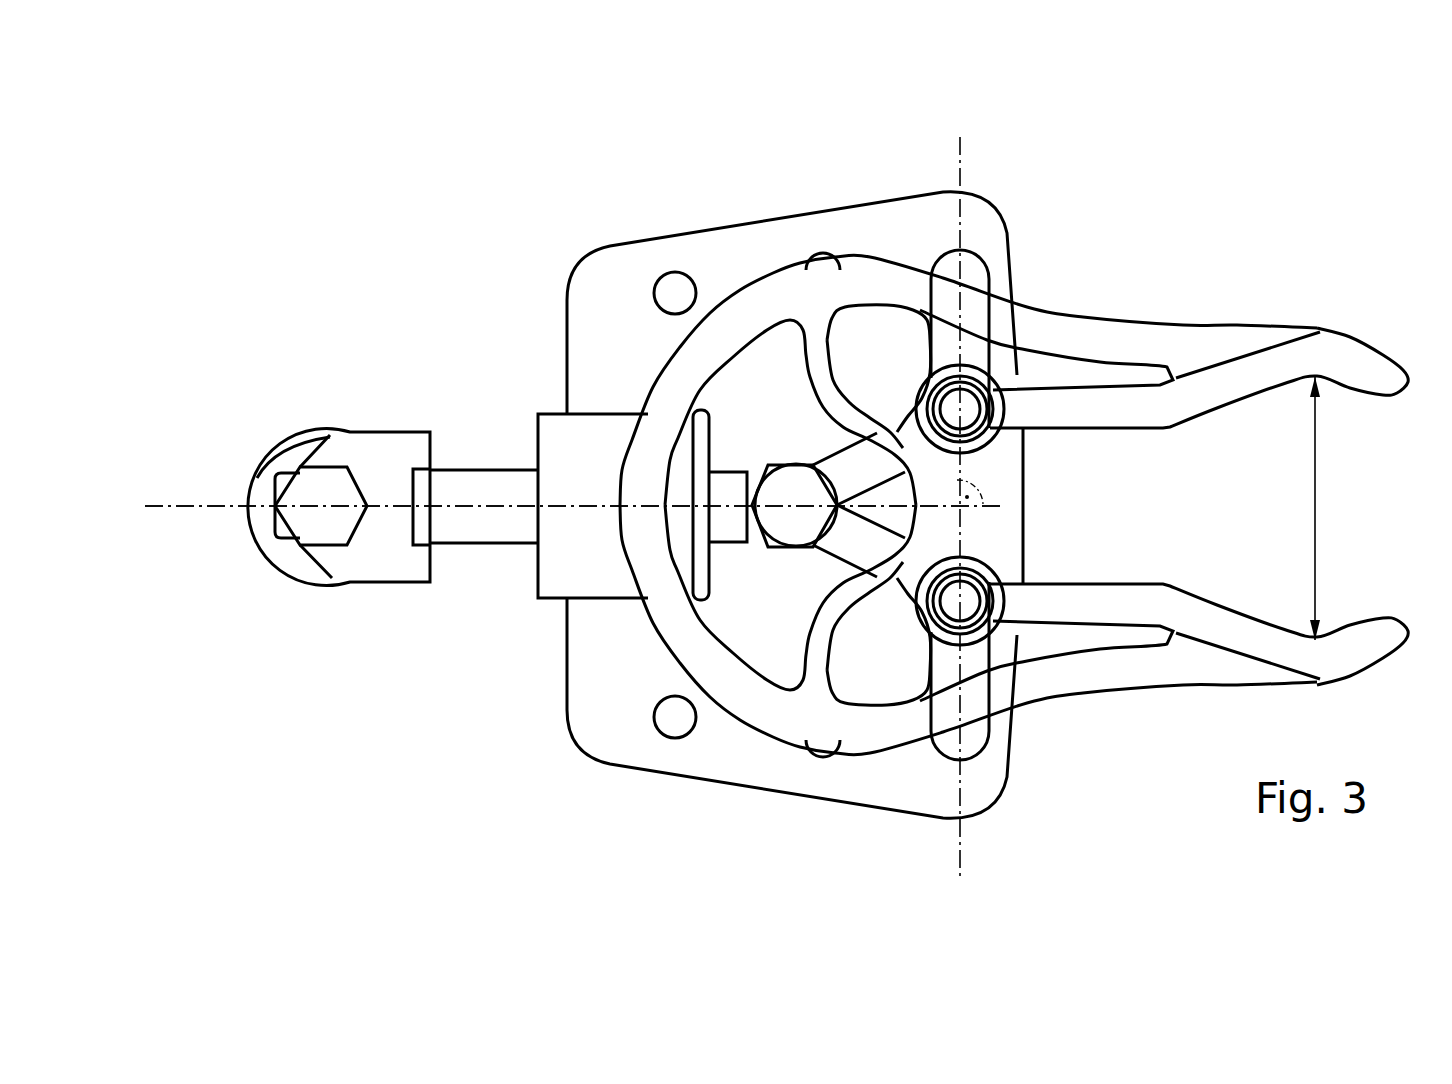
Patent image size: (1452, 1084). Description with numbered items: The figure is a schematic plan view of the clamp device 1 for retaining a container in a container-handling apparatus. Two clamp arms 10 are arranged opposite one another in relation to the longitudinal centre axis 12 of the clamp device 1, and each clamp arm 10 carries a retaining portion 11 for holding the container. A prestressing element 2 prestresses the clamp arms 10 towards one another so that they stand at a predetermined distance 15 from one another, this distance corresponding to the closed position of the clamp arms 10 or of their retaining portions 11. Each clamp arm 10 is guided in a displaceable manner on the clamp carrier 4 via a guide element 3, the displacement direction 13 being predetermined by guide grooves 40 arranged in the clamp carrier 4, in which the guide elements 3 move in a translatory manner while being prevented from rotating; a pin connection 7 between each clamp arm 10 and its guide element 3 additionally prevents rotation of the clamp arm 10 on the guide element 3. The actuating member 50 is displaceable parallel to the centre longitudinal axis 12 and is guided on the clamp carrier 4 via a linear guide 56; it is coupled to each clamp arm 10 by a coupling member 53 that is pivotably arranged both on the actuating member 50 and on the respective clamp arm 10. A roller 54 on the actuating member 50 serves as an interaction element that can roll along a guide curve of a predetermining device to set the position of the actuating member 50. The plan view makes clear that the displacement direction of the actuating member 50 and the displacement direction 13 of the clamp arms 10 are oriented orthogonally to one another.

The clamp device 1 is at (445, 212).
The prestressing element 2 is at (786, 268).
The guide element 3 is at (997, 390).
The clamp carrier 4 is at (613, 275).
The pin connection 7 is at (958, 373).
The clamp arm 10 is at (1117, 605).
The retaining portion 11 is at (1273, 407).
The longitudinal centre axis 12 is at (187, 503).
The displacement direction 13 is at (962, 152).
The predetermined distance 15 is at (1320, 507).
The guide groove 40 is at (967, 270).
The actuating member 50 is at (493, 490).
The coupling member 53 is at (928, 557).
The roller 54 is at (300, 553).
The linear guide 56 is at (563, 577).